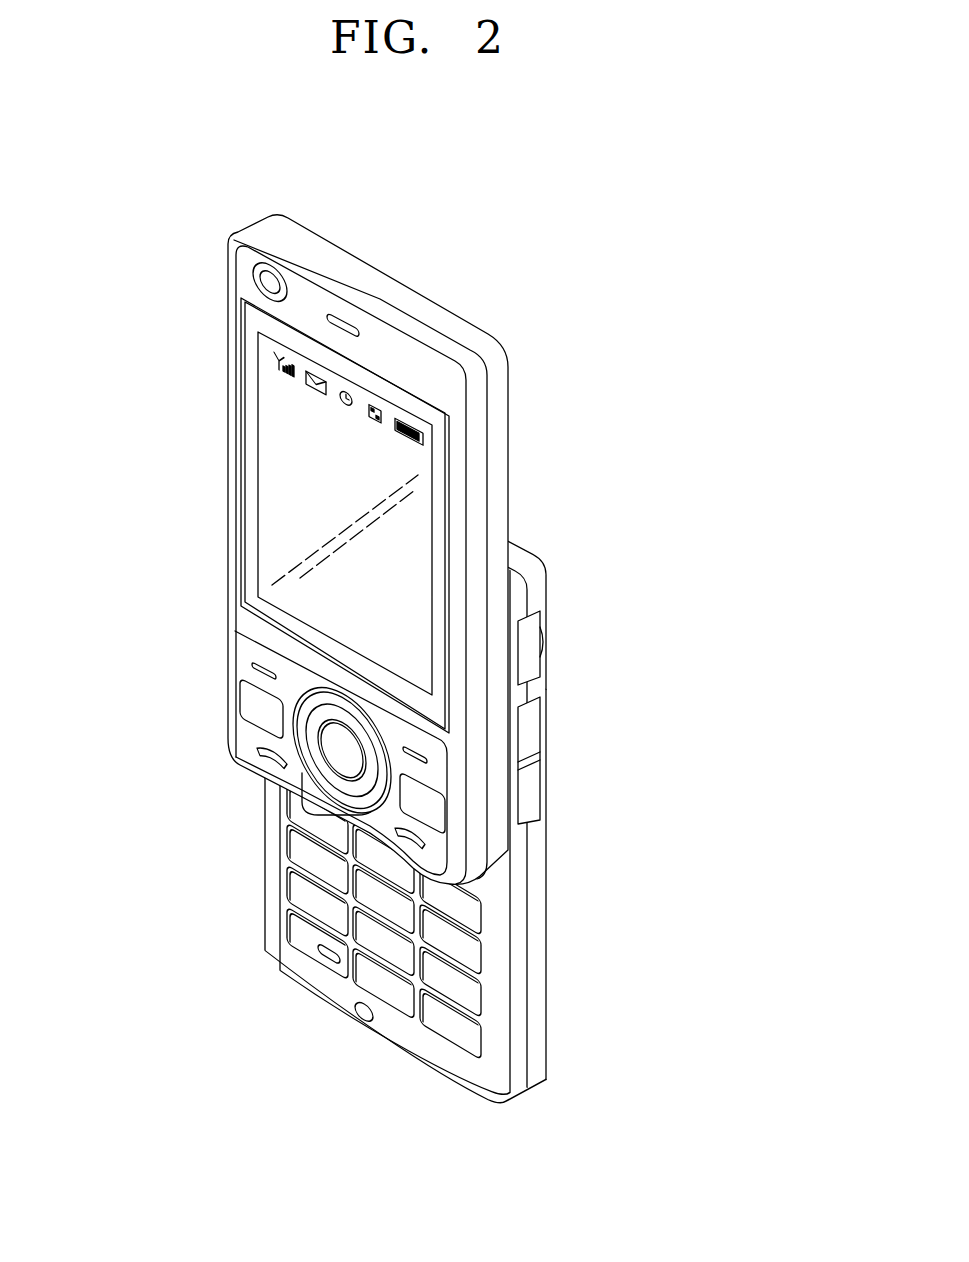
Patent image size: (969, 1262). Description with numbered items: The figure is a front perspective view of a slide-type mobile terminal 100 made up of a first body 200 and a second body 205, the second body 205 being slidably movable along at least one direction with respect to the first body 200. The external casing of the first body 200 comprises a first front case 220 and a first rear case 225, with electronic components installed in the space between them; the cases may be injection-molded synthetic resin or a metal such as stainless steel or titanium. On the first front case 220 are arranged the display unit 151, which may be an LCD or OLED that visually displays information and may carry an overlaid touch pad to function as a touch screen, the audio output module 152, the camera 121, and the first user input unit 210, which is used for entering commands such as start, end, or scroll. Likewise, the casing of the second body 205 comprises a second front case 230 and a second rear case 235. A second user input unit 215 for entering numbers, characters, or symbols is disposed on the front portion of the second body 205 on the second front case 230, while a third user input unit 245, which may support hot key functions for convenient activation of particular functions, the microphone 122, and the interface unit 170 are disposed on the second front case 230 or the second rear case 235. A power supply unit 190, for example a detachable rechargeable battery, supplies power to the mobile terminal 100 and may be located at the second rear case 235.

The mobile terminal 100 is at (370, 664).
The first body 200 is at (345, 540).
The second body 205 is at (390, 784).
The first user input unit 210 is at (250, 697).
The second user input unit 215 is at (293, 918).
The first front case 220 is at (477, 427).
The first rear case 225 is at (497, 402).
The second front case 230 is at (526, 606).
The second rear case 235 is at (522, 560).
The third user input unit 245 is at (532, 793).
The interface unit 170 is at (533, 642).
The power supply unit 190 is at (540, 963).
The display unit 151 is at (276, 458).
The audio output module 152 is at (342, 327).
The camera 121 is at (275, 283).
The microphone 122 is at (363, 1022).